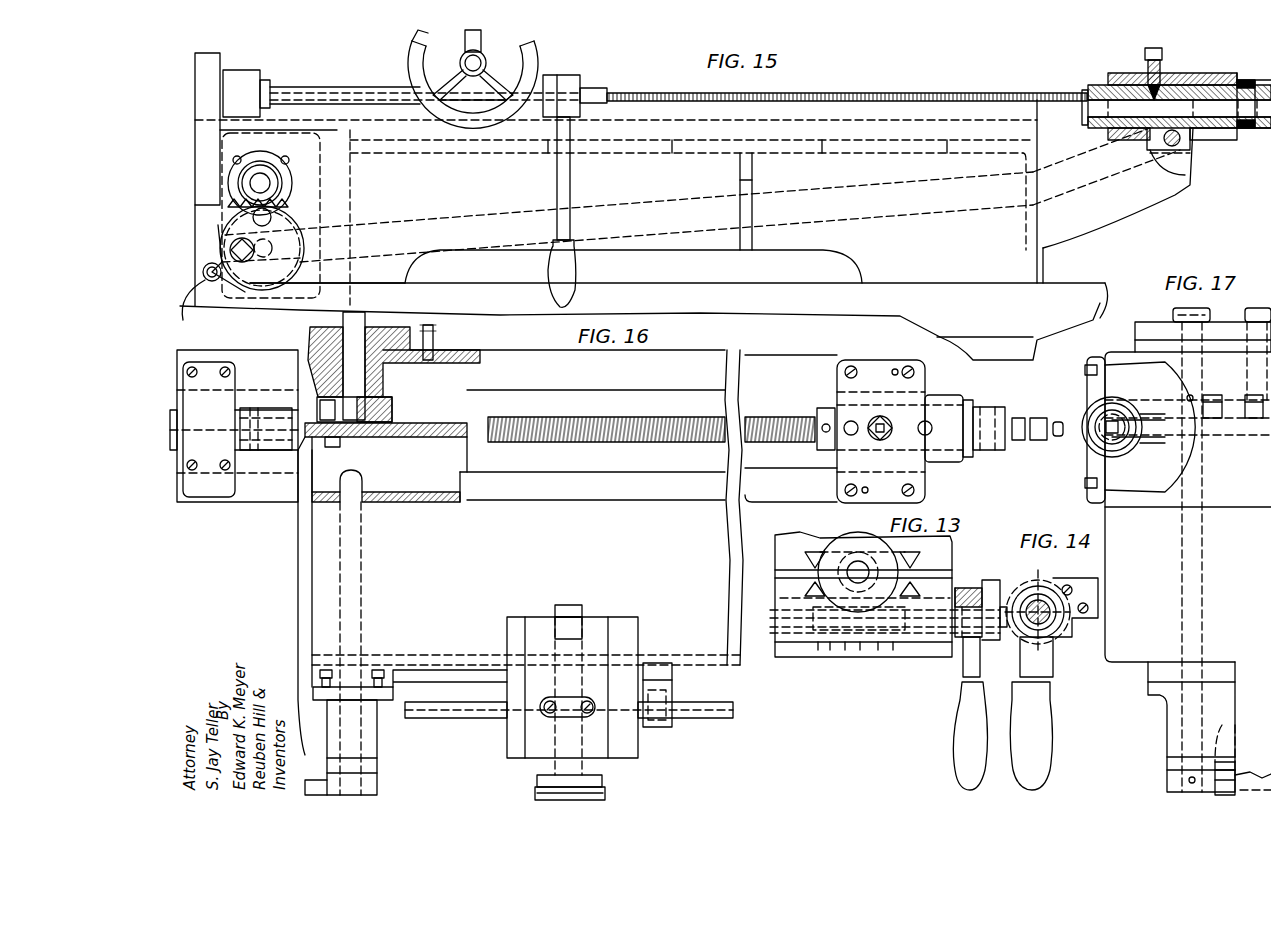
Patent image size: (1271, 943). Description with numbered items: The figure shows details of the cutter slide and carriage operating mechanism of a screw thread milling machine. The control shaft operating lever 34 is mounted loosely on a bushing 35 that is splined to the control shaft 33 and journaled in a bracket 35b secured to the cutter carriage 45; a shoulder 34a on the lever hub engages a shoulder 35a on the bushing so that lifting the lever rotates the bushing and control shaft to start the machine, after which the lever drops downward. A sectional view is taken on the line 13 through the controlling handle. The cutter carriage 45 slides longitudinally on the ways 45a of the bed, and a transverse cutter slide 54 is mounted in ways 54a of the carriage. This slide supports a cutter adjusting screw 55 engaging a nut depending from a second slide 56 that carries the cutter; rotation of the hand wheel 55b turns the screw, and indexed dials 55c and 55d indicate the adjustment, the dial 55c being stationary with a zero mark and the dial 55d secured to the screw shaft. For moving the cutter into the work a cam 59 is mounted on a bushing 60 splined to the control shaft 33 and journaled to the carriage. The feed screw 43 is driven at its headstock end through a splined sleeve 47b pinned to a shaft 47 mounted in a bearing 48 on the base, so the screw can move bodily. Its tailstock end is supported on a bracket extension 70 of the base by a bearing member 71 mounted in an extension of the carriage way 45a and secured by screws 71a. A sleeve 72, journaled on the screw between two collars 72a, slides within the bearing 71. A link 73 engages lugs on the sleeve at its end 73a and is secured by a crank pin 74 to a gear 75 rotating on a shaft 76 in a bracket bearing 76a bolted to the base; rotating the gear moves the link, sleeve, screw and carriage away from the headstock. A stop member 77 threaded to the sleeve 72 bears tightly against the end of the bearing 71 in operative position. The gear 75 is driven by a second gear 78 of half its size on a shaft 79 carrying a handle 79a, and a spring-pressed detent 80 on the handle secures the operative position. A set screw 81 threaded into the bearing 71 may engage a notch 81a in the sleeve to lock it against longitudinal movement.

In FIG. 14, the section line 13 is at (1043, 576).
In FIG. 15, the control shaft 33 is at (598, 93).
In FIG. 16, the control shaft 33 is at (408, 715).
In FIG. 14, the control shaft 33 is at (1048, 630).
In FIG. 15, the control shaft operating lever 34 is at (570, 175).
In FIG. 13, the control shaft operating lever 34 is at (985, 705).
In FIG. 14, the control shaft operating lever 34 is at (1012, 695).
In FIG. 13, the shoulder 34a is at (975, 645).
In FIG. 13, the bushing 35 is at (958, 588).
In FIG. 14, the shoulder 35a is at (1032, 585).
In FIG. 16, the bracket 35b is at (672, 725).
In FIG. 14, the bracket 35b is at (1085, 580).
In FIG. 16, the feed screw 43 is at (295, 440).
In FIG. 15, the cutter carriage 45 is at (1085, 128).
In FIG. 13, the cutter carriage 45 is at (882, 648).
In FIG. 15, the ways 45a is at (876, 122).
In FIG. 17, the ways 45a is at (1135, 372).
In FIG. 16, the shaft 47 is at (234, 426).
In FIG. 16, the sleeve 47b is at (268, 408).
In FIG. 16, the bearing 48 is at (222, 490).
In FIG. 16, the transverse cutter slide 54 is at (655, 605).
In FIG. 13, the transverse cutter slide 54 is at (915, 580).
In FIG. 13, the ways 54a is at (905, 596).
In FIG. 15, the cutter adjusting screw 55 is at (474, 52).
In FIG. 16, the cutter adjusting screw 55 is at (575, 605).
In FIG. 13, the cutter adjusting screw 55 is at (864, 570).
In FIG. 15, the hand wheel 55b is at (412, 41).
In FIG. 13, the hand wheel 55b is at (998, 600).
In FIG. 16, the indexed dial 55c is at (537, 780).
In FIG. 16, the indexed dial 55d is at (602, 790).
In FIG. 13, the second slide 56 is at (810, 550).
In FIG. 13, the cam 59 is at (855, 636).
In FIG. 13, the bushing 60 is at (910, 632).
In FIG. 15, the bracket extension 70 is at (1168, 195).
In FIG. 15, the bearing member 71 is at (1205, 76).
In FIG. 16, the bearing member 71 is at (965, 395).
In FIG. 16, the screws 71a is at (906, 366).
In FIG. 15, the sleeve 72 is at (1135, 75).
In FIG. 16, the sleeve 72 is at (854, 428).
In FIG. 15, the collars 72a is at (1090, 88).
In FIG. 16, the collars 72a is at (817, 410).
In FIG. 15, the link 73 is at (938, 207).
In FIG. 16, the link 73 is at (432, 437).
In FIG. 17, the link 73 is at (1175, 440).
In FIG. 15, the sleeve-engaging end 73a is at (1180, 146).
In FIG. 17, the sleeve-engaging end 73a is at (1185, 428).
In FIG. 16, the crank pin 74 is at (340, 445).
In FIG. 15, the gear 75 is at (300, 256).
In FIG. 16, the gear 75 is at (392, 400).
In FIG. 15, the shaft 76 is at (263, 257).
In FIG. 16, the shaft 76 is at (348, 333).
In FIG. 16, the bracket bearing 76a is at (383, 365).
In FIG. 15, the stop member 77 is at (1245, 80).
In FIG. 16, the stop member 77 is at (978, 455).
In FIG. 15, the second gear 78 is at (282, 175).
In FIG. 17, the second gear 78 is at (1212, 395).
In FIG. 15, the shaft 79 is at (250, 183).
In FIG. 16, the shaft 79 is at (358, 563).
In FIG. 17, the shaft 79 is at (1200, 585).
In FIG. 15, the handle 79a is at (213, 278).
In FIG. 16, the handle 79a is at (377, 785).
In FIG. 15, the spring-pressed detent 80 is at (272, 216).
In FIG. 17, the spring-pressed detent 80 is at (1228, 705).
In FIG. 15, the set screw 81 is at (1160, 55).
In FIG. 16, the set screw 81 is at (886, 428).
In FIG. 15, the notch 81a is at (1150, 95).